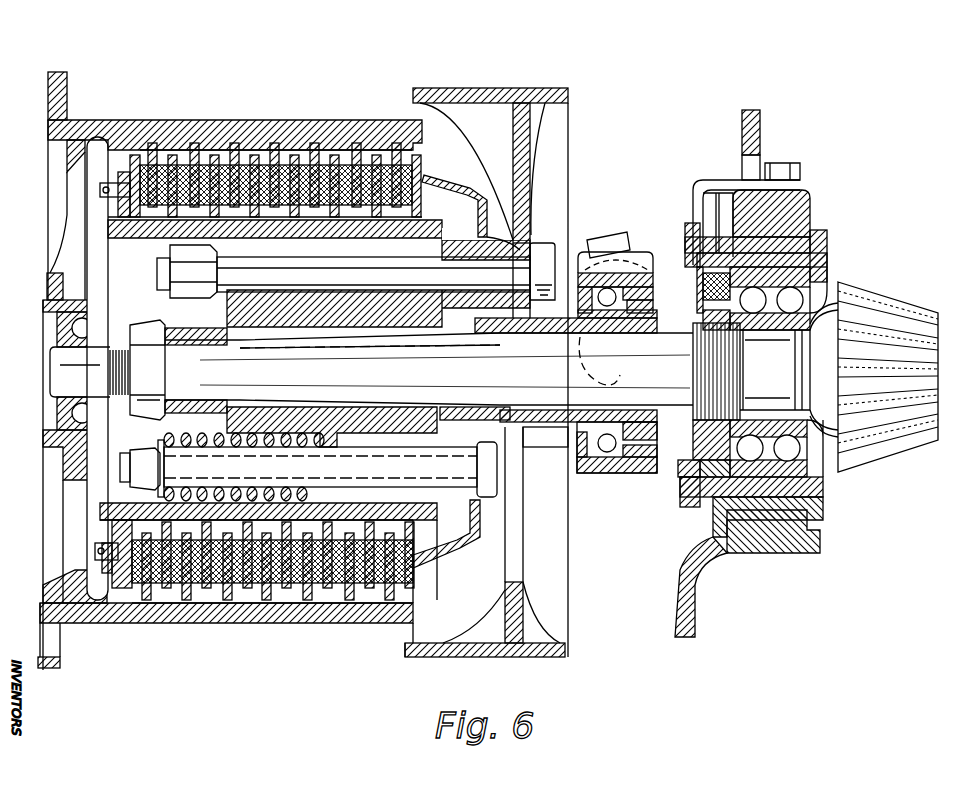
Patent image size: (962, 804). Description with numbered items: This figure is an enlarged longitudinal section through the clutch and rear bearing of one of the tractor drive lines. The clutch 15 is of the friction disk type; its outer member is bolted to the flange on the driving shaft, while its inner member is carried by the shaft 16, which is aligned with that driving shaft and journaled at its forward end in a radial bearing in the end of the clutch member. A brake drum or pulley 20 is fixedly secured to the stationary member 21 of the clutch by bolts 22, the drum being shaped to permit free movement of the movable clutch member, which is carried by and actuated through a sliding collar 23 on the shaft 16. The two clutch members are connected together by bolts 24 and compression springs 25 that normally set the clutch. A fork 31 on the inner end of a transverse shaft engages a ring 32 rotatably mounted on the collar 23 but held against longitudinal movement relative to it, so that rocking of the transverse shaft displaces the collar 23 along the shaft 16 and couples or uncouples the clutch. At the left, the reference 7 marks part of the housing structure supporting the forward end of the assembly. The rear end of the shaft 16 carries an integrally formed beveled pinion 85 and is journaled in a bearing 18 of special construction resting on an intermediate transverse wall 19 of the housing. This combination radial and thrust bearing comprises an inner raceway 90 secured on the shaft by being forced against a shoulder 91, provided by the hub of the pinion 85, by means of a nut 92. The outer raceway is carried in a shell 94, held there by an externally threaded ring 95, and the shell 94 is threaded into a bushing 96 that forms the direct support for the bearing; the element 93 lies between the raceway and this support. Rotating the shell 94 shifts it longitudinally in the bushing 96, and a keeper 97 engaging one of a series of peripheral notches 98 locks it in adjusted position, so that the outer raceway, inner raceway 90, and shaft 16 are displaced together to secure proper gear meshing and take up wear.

The housing bearing support 7 is at (62, 318).
The clutch 15 is at (232, 122).
The shaft 16 is at (430, 370).
The bearing 18 is at (812, 223).
The intermediate transverse wall 19 is at (760, 132).
The brake drum 20 is at (518, 88).
The stationary member of the clutch 21 is at (422, 235).
The bolts 22 is at (447, 267).
The sliding collar 23 is at (543, 427).
The bolts 24 is at (455, 553).
The compression springs 25 is at (205, 442).
The fork 31 is at (610, 238).
The ring 32 is at (617, 475).
The beveled pinion 85 is at (873, 293).
The inner raceway 90 is at (823, 443).
The shoulder 91 is at (808, 360).
The nut 92 is at (700, 440).
The bearing housing ring 93 is at (823, 487).
The shell 94 is at (690, 495).
The externally threaded ring 95 is at (697, 472).
The bushing 96 is at (717, 522).
The keeper 97 is at (693, 197).
The peripheral notches 98 is at (685, 233).